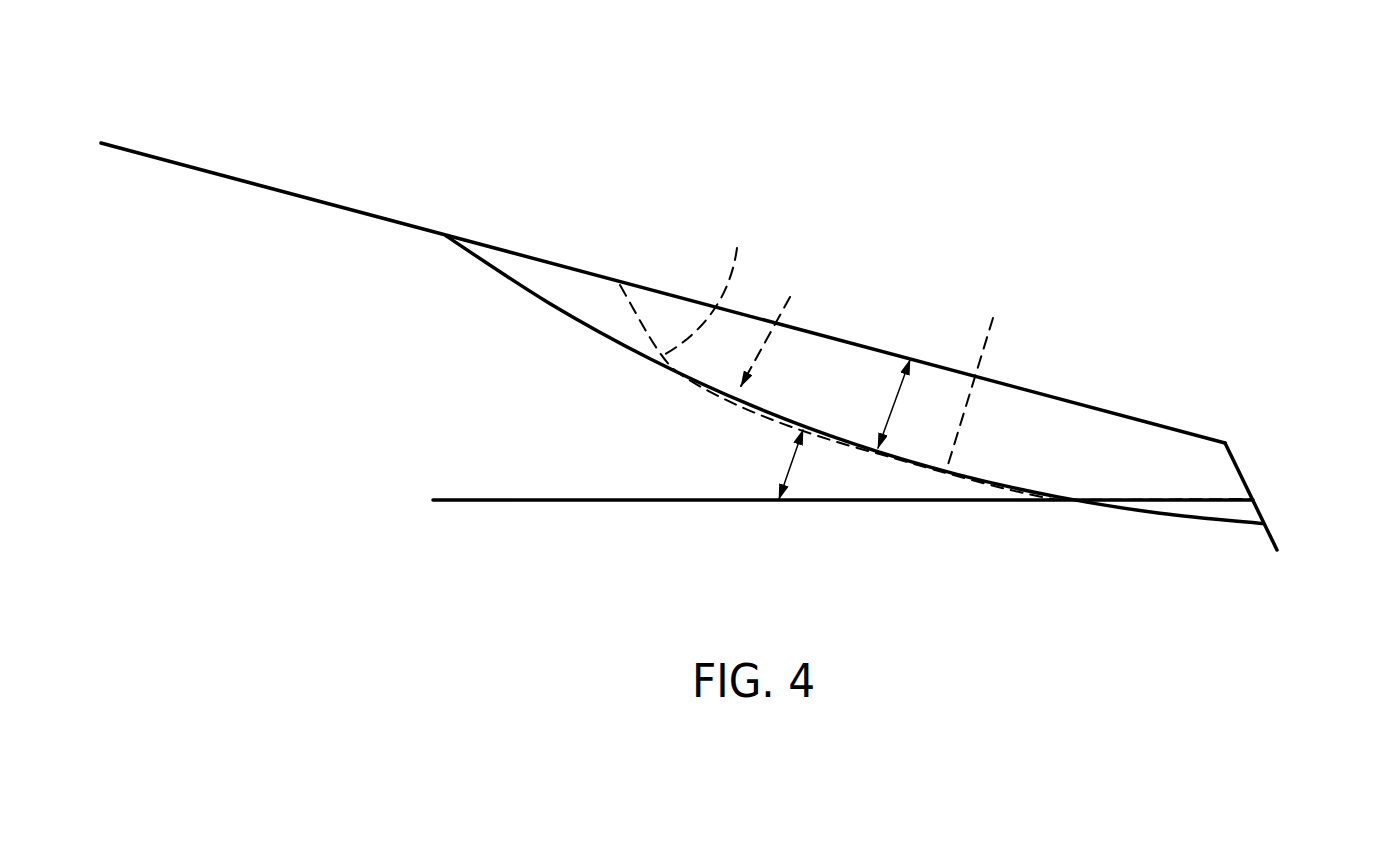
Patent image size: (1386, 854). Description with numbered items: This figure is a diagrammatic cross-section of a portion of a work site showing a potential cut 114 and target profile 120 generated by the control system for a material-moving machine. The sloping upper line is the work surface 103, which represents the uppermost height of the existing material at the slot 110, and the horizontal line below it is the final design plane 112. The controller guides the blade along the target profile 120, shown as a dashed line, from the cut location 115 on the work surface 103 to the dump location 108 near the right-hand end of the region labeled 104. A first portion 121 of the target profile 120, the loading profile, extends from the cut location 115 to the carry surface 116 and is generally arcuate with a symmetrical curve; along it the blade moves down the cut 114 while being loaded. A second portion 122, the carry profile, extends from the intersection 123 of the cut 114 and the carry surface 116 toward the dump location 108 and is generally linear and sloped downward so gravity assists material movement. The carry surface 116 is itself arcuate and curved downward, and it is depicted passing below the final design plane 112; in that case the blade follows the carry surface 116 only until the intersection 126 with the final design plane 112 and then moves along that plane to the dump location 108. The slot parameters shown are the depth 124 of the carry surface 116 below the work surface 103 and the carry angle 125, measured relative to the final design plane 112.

The work surface 103 is at (310, 197).
The flap panel 104 is at (1062, 440).
The dump location 108 is at (1286, 416).
The slot 110 is at (792, 242).
The final design plane 112 is at (590, 500).
The cut 114 is at (653, 293).
The cut location 115 is at (620, 285).
The carry surface 116 is at (533, 293).
The target profile 120 is at (778, 326).
The first portion of the target profile 121 is at (714, 288).
The second portion of the target profile 122 is at (983, 377).
The intersection of the cut and the carry surface 123 is at (722, 395).
The depth of the carry surface 124 is at (890, 405).
The carry angle 125 is at (790, 463).
The intersection of the carry surface and the final design plane 126 is at (1063, 500).